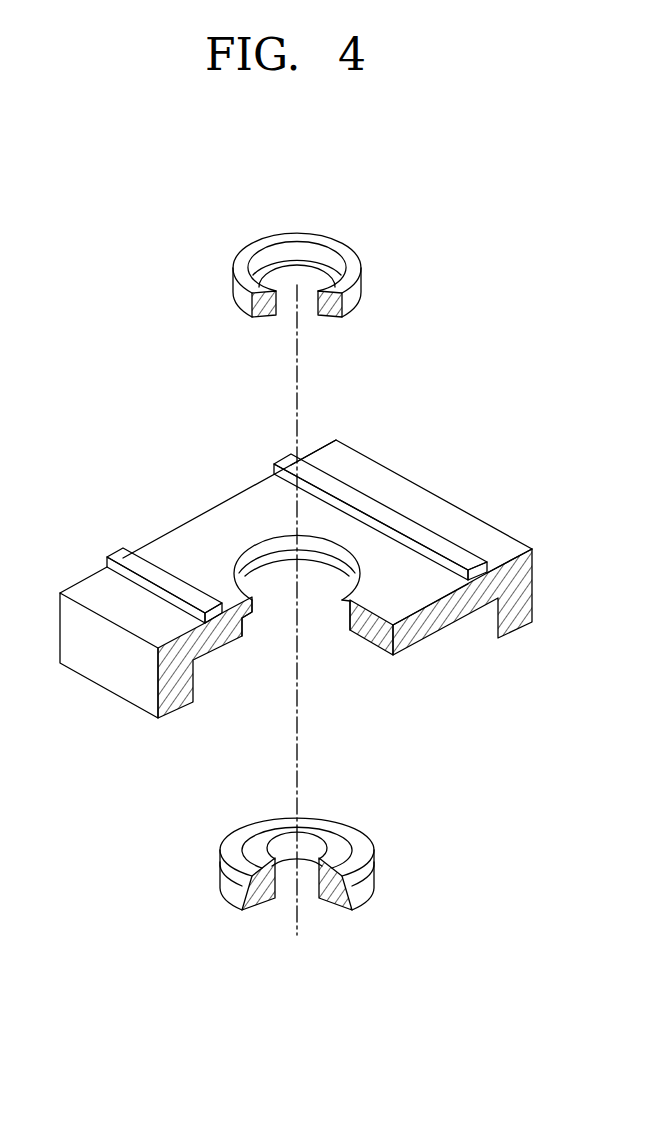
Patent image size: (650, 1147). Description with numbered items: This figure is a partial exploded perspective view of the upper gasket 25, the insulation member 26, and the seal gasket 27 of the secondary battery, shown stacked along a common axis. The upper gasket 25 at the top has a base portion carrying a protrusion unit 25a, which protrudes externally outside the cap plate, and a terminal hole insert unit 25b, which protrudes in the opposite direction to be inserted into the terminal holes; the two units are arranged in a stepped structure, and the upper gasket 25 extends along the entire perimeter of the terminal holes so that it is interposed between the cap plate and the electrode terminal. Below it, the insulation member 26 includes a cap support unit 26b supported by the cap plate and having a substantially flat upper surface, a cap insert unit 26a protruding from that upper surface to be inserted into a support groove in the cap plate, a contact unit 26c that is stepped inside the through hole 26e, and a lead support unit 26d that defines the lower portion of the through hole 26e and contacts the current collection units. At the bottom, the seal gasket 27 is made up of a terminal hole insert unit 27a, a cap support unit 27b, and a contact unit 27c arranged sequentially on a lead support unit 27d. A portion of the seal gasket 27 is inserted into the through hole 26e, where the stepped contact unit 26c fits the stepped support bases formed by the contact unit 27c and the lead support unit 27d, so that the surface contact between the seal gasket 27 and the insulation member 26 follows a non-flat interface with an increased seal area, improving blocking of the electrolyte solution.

The upper gasket 25 is at (240, 237).
The protrusion unit 25a is at (353, 301).
The terminal hole insert unit 25b is at (327, 316).
The insulation member 26 is at (132, 524).
The cap insert unit 26a is at (467, 563).
The cap support unit 26b is at (430, 497).
The contact unit 26c is at (345, 605).
The lead support unit 26d is at (442, 632).
The through hole 26e is at (286, 598).
The seal gasket 27 is at (195, 867).
The terminal hole insert unit 27a is at (333, 840).
The cap support unit 27b is at (350, 852).
The contact unit 27c is at (365, 870).
The lead support unit 27d is at (337, 907).